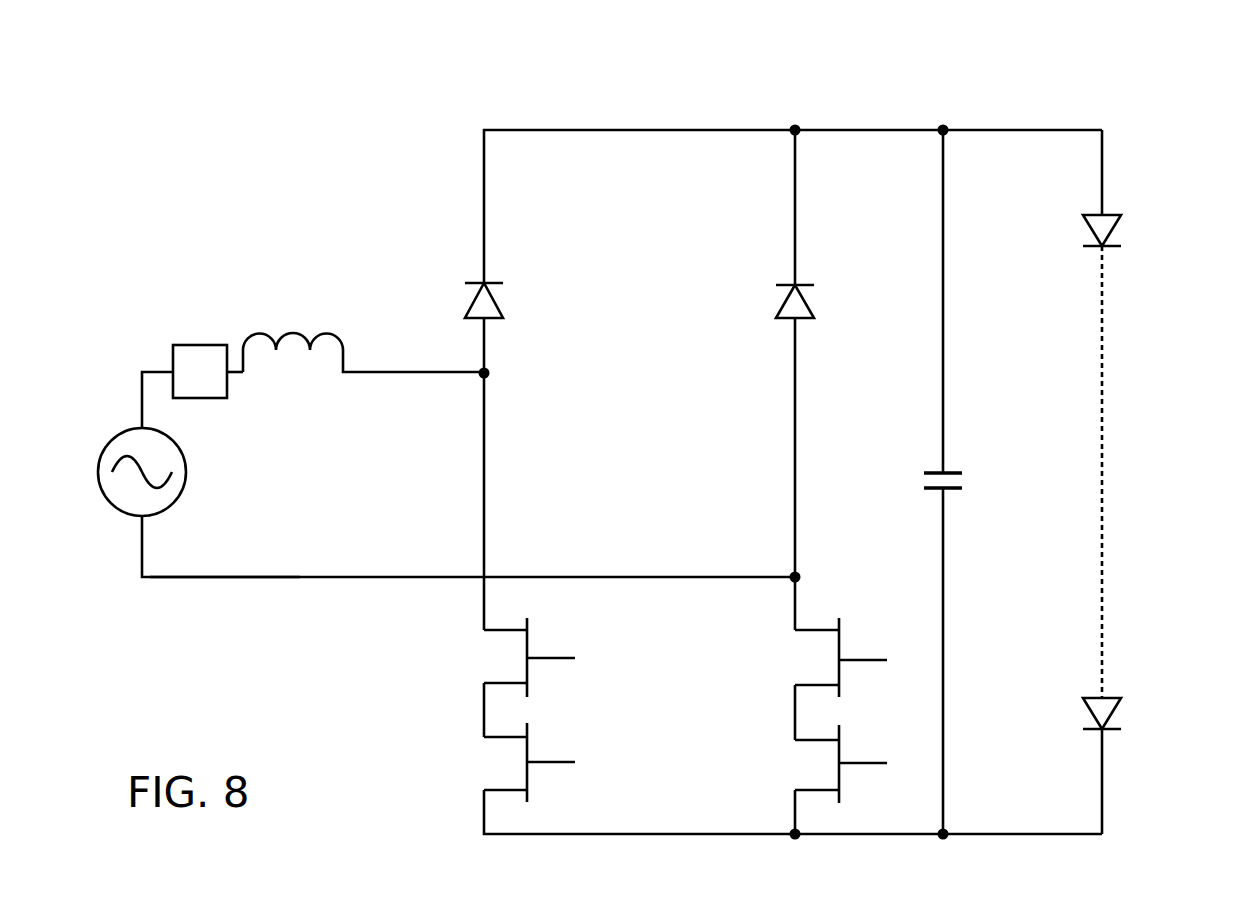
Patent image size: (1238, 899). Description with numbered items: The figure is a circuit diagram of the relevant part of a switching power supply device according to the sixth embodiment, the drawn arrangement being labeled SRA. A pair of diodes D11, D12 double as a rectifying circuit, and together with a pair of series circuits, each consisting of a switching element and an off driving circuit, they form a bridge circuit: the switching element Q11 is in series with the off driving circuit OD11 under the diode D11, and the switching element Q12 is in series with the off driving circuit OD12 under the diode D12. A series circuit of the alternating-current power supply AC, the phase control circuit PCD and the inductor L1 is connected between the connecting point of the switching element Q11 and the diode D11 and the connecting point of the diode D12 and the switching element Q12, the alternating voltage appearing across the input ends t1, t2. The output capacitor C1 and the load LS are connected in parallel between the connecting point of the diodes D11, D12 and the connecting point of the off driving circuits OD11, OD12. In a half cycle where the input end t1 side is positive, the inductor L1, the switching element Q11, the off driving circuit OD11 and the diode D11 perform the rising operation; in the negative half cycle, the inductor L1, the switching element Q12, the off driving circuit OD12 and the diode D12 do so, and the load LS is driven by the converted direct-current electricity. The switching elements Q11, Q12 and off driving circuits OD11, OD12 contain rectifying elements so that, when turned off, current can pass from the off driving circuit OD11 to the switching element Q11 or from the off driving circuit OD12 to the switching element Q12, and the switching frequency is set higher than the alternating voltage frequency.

The switching rectifier / power conversion circuit SRA is at (442, 38).
The alternating-current power supply AC is at (187, 462).
The phase control circuit PCD is at (202, 345).
The input end t1 is at (237, 368).
The second input terminal t2 is at (230, 578).
The inductor L1 is at (300, 347).
The diode D11 is at (470, 296).
The diode D12 is at (785, 302).
The switching element Q11 is at (508, 653).
The switching element Q12 is at (828, 660).
The off driving circuit OD11 is at (515, 762).
The off driving circuit OD12 is at (828, 762).
The output capacitor C1 is at (925, 478).
The load LS is at (1118, 228).